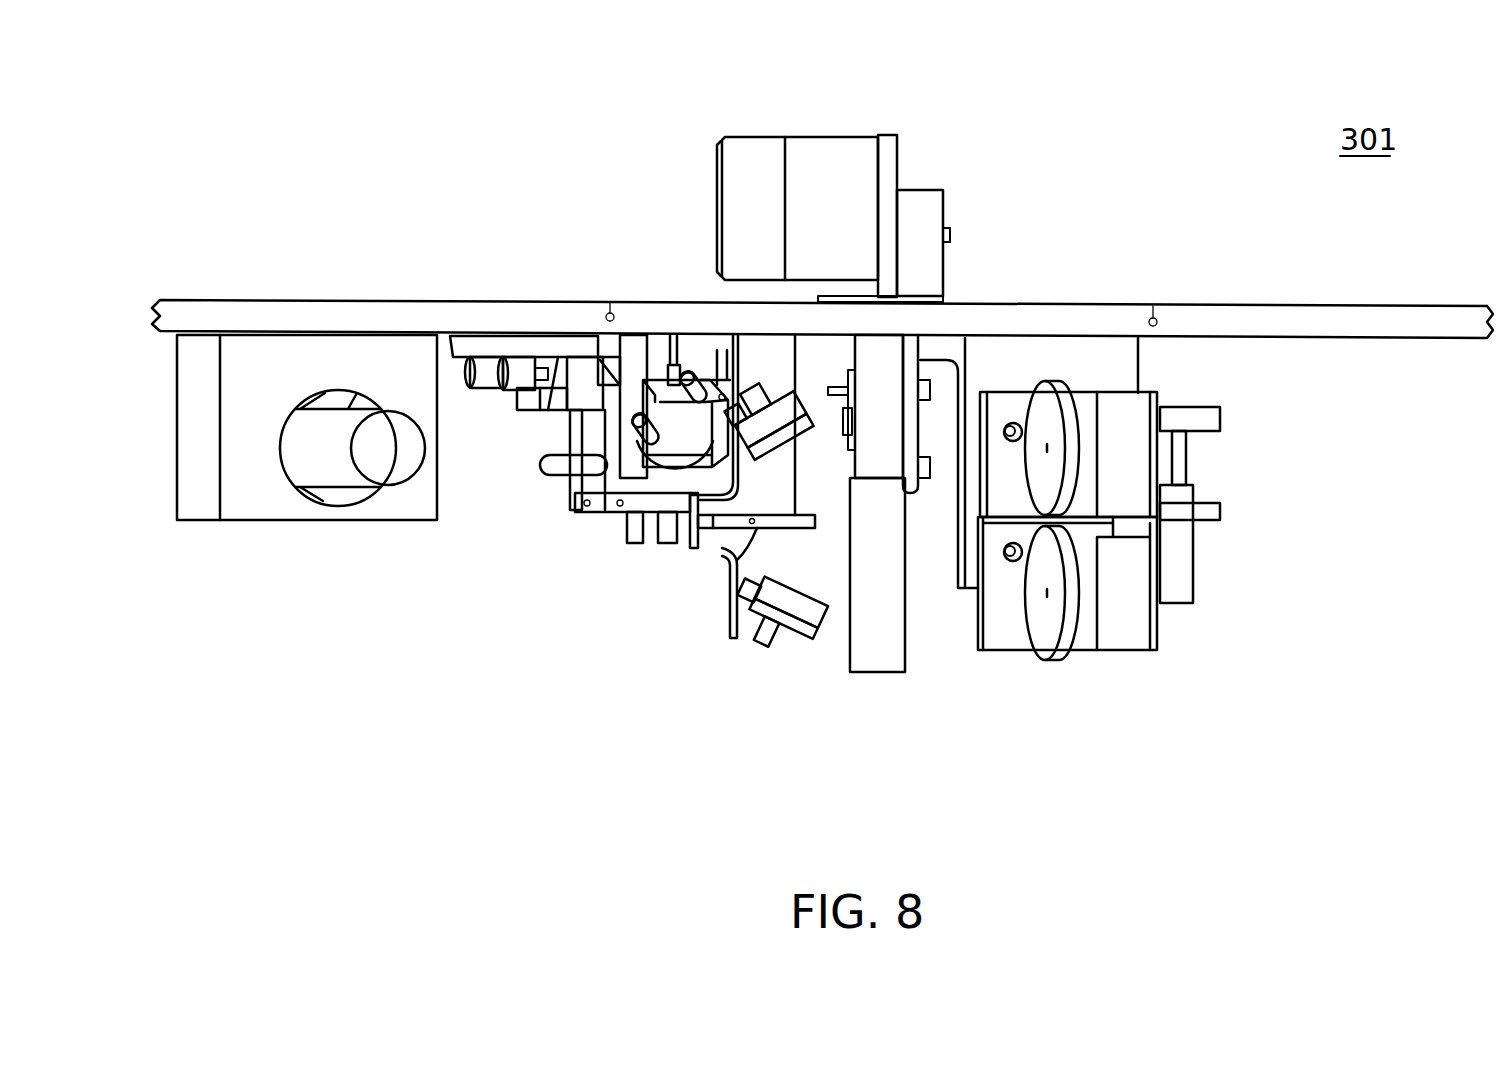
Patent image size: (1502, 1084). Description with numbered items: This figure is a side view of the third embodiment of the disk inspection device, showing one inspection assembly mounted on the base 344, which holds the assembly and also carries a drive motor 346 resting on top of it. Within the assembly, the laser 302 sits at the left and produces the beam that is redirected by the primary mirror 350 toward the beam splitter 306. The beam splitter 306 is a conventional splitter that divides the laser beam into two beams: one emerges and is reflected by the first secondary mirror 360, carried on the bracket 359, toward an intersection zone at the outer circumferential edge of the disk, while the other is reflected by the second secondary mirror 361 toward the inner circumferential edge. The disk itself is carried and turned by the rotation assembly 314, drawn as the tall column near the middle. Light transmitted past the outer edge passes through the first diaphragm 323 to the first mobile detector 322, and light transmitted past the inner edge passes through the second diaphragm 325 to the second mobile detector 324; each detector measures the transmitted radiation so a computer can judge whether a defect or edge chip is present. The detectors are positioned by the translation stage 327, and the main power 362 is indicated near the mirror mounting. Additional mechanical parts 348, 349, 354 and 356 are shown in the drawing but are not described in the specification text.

The laser 302 is at (352, 404).
The beam splitter 306 is at (730, 560).
The rotation assembly 314 is at (880, 674).
The first mobile detector 322 is at (1143, 583).
The first diaphragm 323 is at (1072, 627).
The second mobile detector 324 is at (1155, 460).
The second diaphragm 325 is at (1062, 385).
The translation stage 327 is at (1138, 358).
The base 344 is at (1436, 306).
The drive motor 346 is at (928, 190).
The guide rod 348 is at (568, 483).
The base plate 349 is at (568, 500).
The primary mirror 350 is at (667, 473).
The actuator cylinder 354 is at (482, 355).
The mounting block 356 is at (575, 355).
The bracket 359 is at (728, 608).
The first secondary mirror 360 is at (776, 672).
The second secondary mirror 361 is at (768, 395).
The main power 362 is at (627, 460).